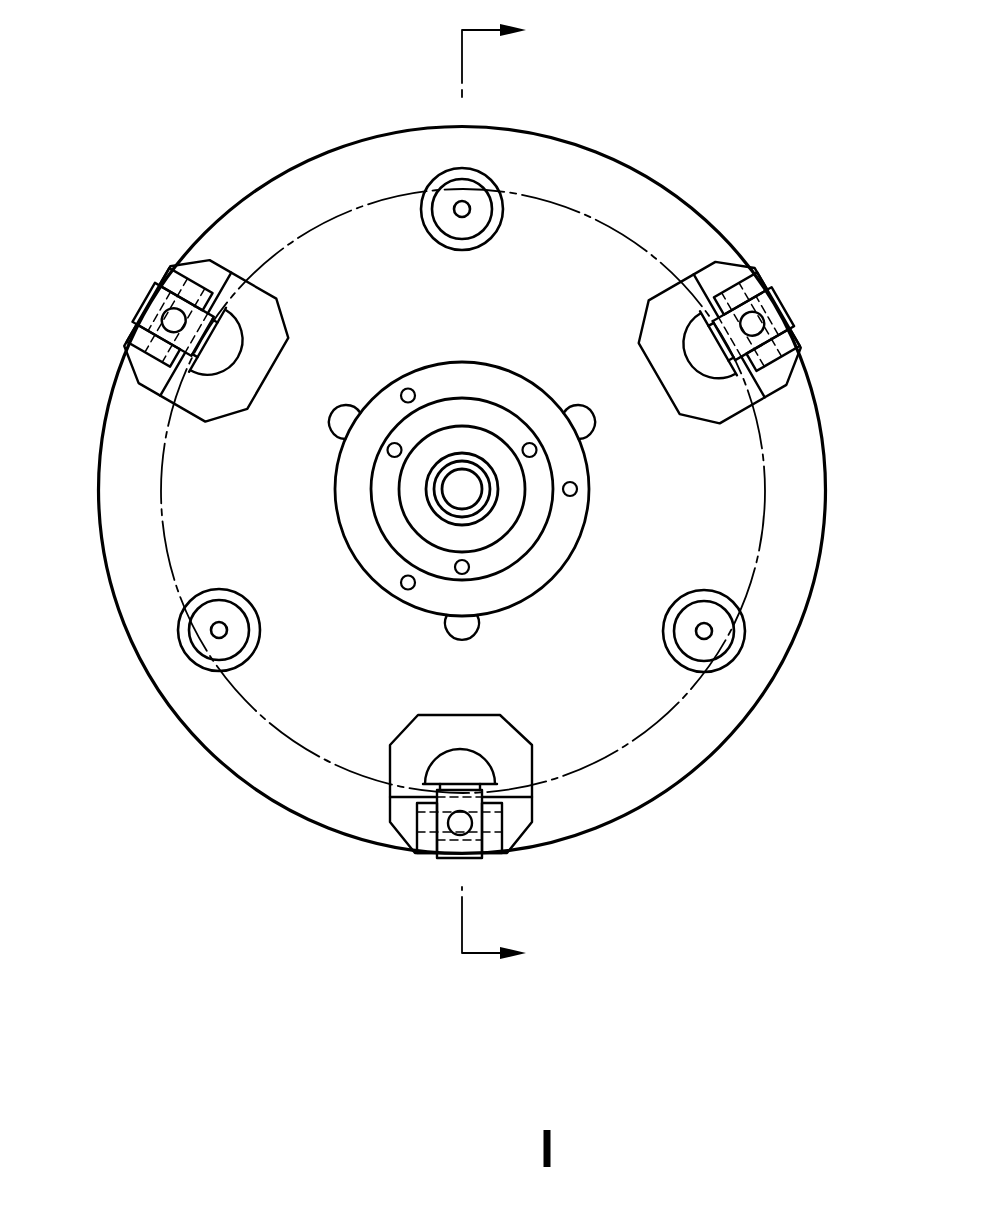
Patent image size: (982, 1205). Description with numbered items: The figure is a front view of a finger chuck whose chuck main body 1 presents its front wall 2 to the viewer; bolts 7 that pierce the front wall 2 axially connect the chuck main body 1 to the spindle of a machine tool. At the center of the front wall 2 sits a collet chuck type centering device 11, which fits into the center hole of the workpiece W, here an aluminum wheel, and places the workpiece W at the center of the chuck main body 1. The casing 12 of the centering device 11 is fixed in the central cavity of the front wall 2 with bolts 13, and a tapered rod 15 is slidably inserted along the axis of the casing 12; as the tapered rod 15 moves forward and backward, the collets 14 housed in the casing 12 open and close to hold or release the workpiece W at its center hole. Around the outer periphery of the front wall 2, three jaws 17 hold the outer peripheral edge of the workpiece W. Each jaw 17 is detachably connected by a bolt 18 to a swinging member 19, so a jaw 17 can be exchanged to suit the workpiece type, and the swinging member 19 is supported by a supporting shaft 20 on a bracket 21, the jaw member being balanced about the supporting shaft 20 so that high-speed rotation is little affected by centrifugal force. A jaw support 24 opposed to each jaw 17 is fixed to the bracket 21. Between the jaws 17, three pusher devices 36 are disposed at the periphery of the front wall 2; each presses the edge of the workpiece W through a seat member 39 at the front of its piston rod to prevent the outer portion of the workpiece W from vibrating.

The chuck main body 1 is at (357, 138).
The front wall 2 is at (237, 768).
The workpiece W is at (640, 247).
The bolts 7 is at (460, 630).
The centering device 11 is at (426, 362).
The casing 12 is at (348, 498).
The bolts 13 is at (402, 587).
The collets 14 is at (493, 507).
The tapered rod 15 is at (463, 478).
The jaw 17 is at (409, 501).
The bolt 18 is at (162, 377).
The swinging member 19 is at (170, 300).
The supporting shaft 20 is at (140, 305).
The bracket 21 is at (255, 385).
The jaw support 24 is at (232, 327).
The pusher device 36 is at (461, 438).
The seat member 39 is at (218, 610).